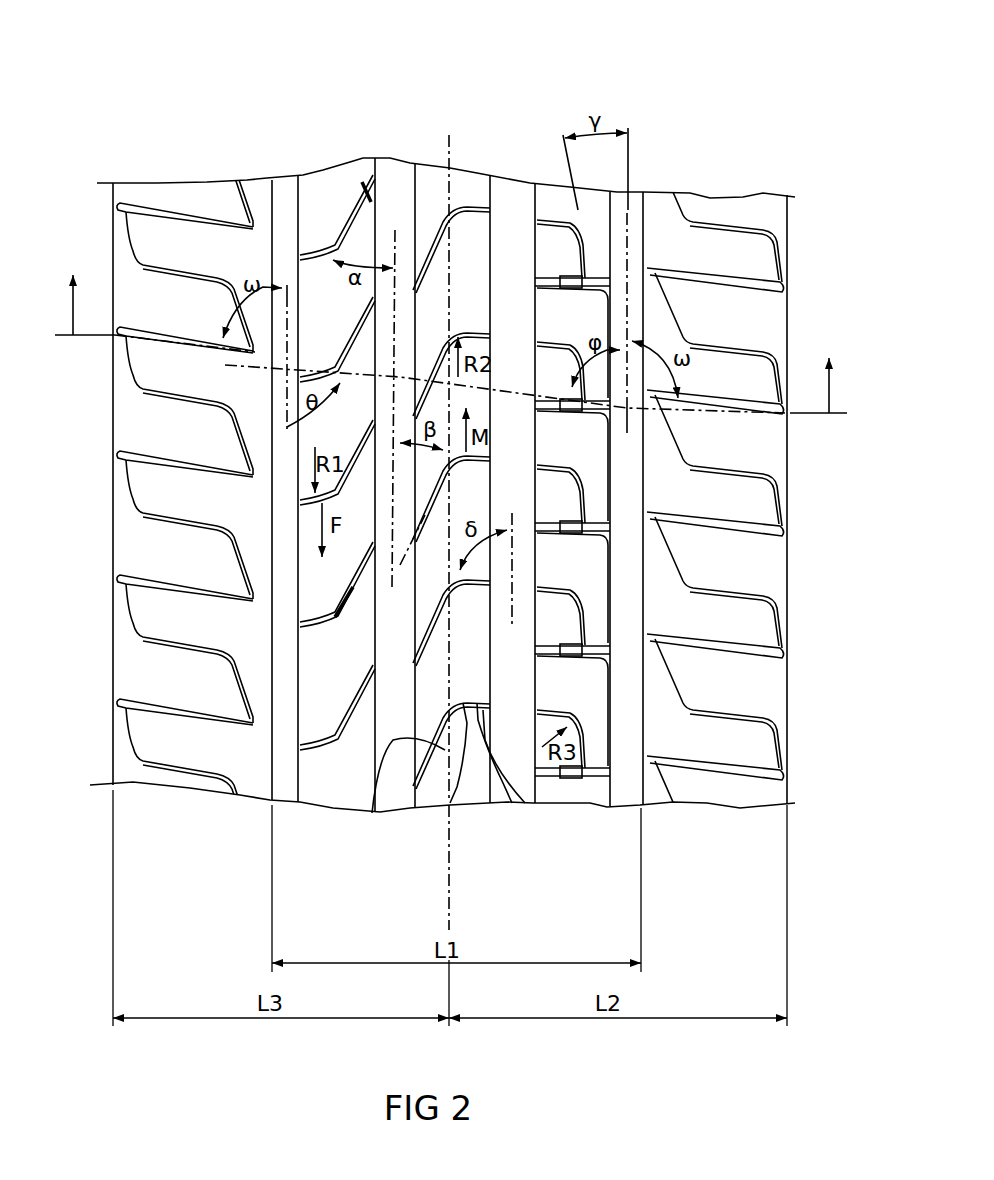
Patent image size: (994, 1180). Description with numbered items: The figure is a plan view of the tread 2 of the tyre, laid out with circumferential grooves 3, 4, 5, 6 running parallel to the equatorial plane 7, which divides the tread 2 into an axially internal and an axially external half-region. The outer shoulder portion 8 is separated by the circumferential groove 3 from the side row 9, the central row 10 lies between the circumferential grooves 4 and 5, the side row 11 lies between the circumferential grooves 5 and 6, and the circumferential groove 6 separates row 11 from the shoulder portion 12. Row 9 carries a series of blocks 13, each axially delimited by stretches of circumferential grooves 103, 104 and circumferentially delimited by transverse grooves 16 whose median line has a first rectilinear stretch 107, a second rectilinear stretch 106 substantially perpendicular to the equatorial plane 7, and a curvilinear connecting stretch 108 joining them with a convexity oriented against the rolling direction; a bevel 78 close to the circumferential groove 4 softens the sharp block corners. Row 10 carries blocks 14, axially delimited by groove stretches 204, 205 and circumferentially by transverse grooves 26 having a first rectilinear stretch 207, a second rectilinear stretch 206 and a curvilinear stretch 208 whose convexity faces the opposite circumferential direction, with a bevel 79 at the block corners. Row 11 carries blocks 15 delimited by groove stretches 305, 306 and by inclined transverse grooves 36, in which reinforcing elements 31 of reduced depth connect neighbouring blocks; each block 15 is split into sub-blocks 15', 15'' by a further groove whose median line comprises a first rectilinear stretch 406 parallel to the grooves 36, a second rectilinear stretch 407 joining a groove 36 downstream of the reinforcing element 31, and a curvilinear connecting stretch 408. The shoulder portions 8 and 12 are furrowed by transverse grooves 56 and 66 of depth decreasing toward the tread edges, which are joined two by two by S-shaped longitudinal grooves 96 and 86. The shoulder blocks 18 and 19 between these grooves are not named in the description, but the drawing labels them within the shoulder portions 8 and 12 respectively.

The tread 2 is at (186, 146).
The circumferential groove 3 is at (292, 192).
The circumferential groove 4 is at (388, 178).
The circumferential groove 5 is at (517, 192).
The circumferential groove 6 is at (637, 190).
The equatorial plane 7 is at (449, 152).
The shoulder portion 8 is at (168, 183).
The circumferential row 9 is at (307, 810).
The circumferential row 10 is at (472, 808).
The circumferential row 11 is at (593, 808).
The shoulder portion 12 is at (728, 192).
The block 13 is at (312, 334).
The block 14 is at (456, 282).
The block 15 is at (572, 499).
The sub-block 15' is at (561, 616).
The sub-block 15'' is at (572, 588).
The transverse groove 16 is at (328, 248).
The first shoulder block 18 is at (168, 504).
The second shoulder block 19 is at (717, 334).
The transverse groove 26 is at (477, 207).
The reinforcing element 31 is at (580, 212).
The transverse groove 36 is at (495, 682).
The transverse groove 56 is at (180, 215).
The transverse groove 66 is at (752, 540).
The bevel 78 is at (367, 197).
The bevel 79 is at (393, 790).
The longitudinal groove 86 is at (758, 600).
The longitudinal groove 96 is at (215, 393).
The stretch of circumferential groove 103 is at (263, 210).
The stretch of circumferential groove 104 is at (395, 210).
The second rectilinear stretch 106 is at (320, 623).
The first rectilinear stretch 107 is at (345, 600).
The curvilinear connecting stretch 108 is at (320, 637).
The stretch of circumferential groove 204 is at (420, 700).
The stretch of circumferential groove 205 is at (512, 207).
The second rectilinear stretch 206 is at (385, 760).
The first rectilinear stretch 207 is at (527, 765).
The curvilinear connecting stretch 208 is at (488, 772).
The stretch of circumferential groove 305 is at (527, 197).
The stretch of circumferential groove 306 is at (643, 237).
The first rectilinear stretch 406 is at (575, 455).
The second rectilinear stretch 407 is at (650, 512).
The curvilinear connecting stretch 408 is at (565, 462).